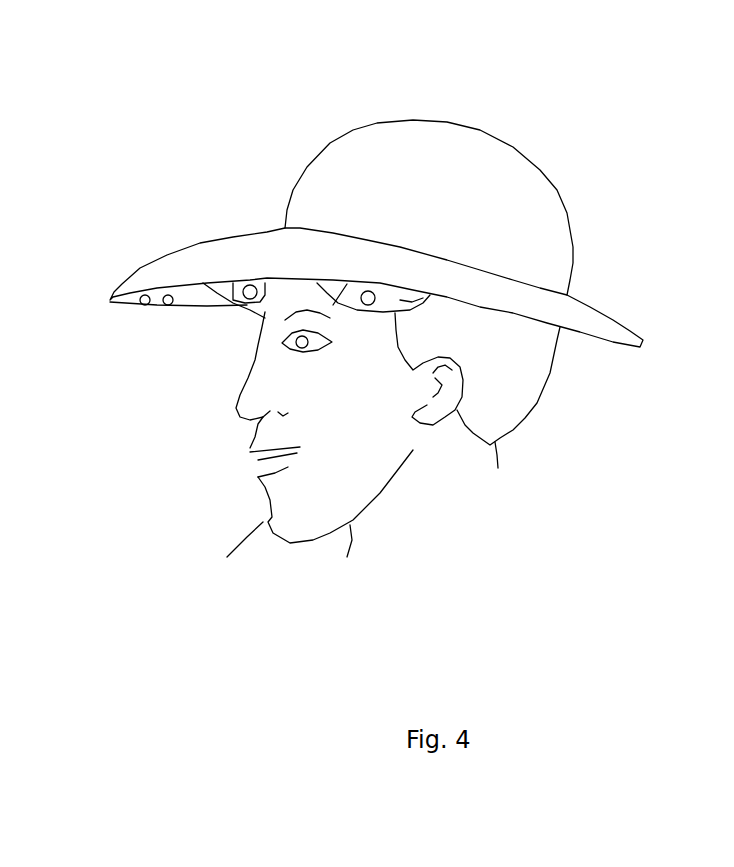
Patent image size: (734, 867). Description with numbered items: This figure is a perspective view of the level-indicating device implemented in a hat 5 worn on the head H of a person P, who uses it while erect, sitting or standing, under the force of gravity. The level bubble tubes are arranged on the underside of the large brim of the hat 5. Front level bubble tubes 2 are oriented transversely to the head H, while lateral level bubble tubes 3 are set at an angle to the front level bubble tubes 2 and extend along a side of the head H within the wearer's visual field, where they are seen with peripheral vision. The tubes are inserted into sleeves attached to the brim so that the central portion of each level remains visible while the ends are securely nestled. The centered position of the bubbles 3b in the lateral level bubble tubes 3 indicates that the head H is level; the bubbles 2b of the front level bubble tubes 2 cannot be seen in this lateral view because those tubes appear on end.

The person P is at (387, 182).
The hat 5 is at (567, 202).
The front level bubble tubes 2 is at (213, 297).
The sensor lens housing 2b is at (243, 300).
The lateral level bubble tubes 3 is at (385, 313).
The bubbles 3b is at (368, 307).
The head H is at (379, 449).